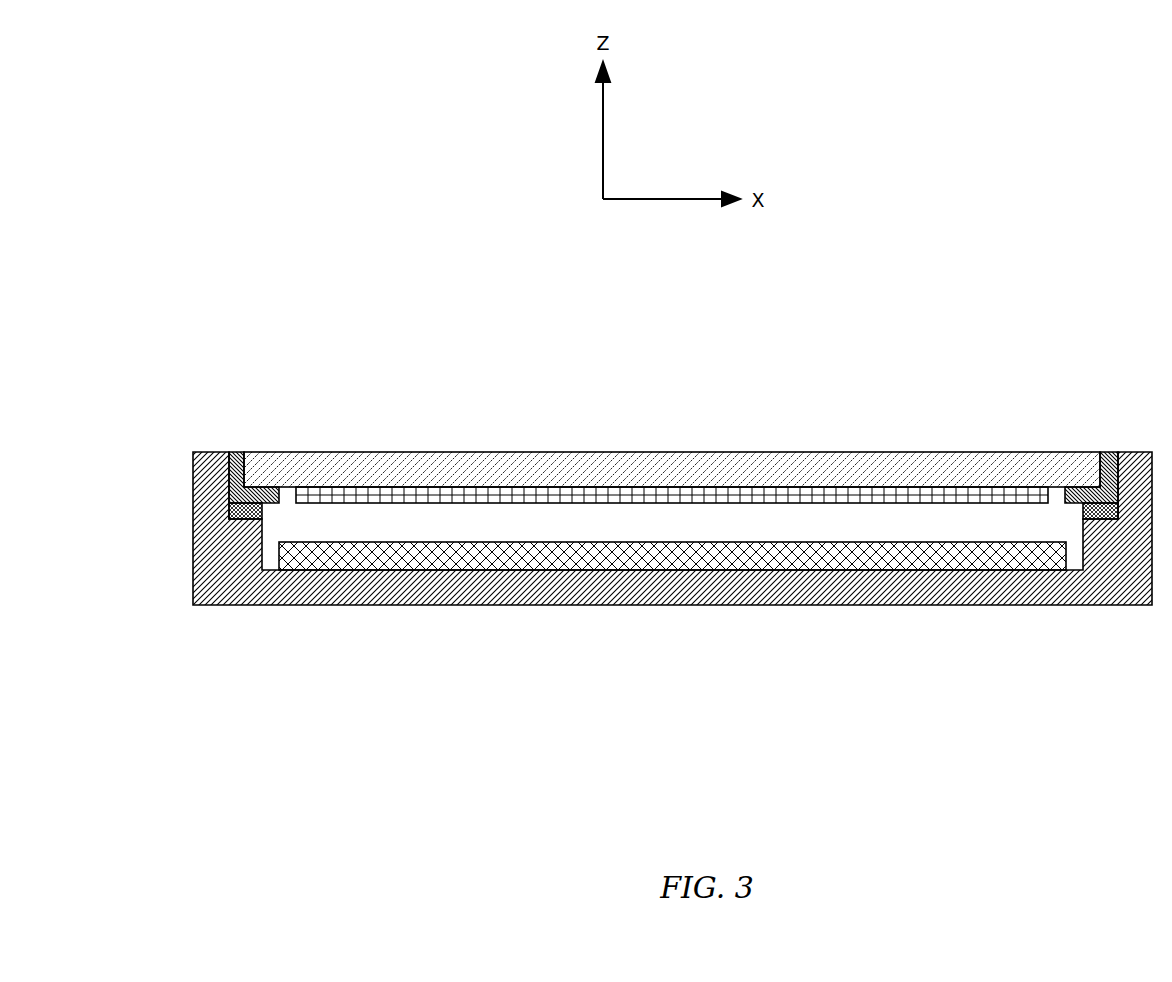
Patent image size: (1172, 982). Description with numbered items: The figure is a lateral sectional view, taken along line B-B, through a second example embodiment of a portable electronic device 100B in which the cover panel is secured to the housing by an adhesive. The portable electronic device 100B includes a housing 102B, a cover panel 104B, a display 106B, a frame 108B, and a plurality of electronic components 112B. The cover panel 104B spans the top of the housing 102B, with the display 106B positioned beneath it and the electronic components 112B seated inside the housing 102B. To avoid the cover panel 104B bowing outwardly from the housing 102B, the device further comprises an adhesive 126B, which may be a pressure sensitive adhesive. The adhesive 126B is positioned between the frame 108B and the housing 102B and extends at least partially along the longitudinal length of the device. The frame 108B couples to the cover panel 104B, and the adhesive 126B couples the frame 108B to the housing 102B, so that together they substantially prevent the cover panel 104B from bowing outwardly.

The portable electronic device 100B is at (245, 324).
The housing 102B is at (193, 572).
The cover panel 104B is at (605, 452).
The display 106B is at (860, 503).
The frame 108B is at (236, 452).
The electronic components 112B is at (470, 542).
The adhesive 126B is at (262, 508).